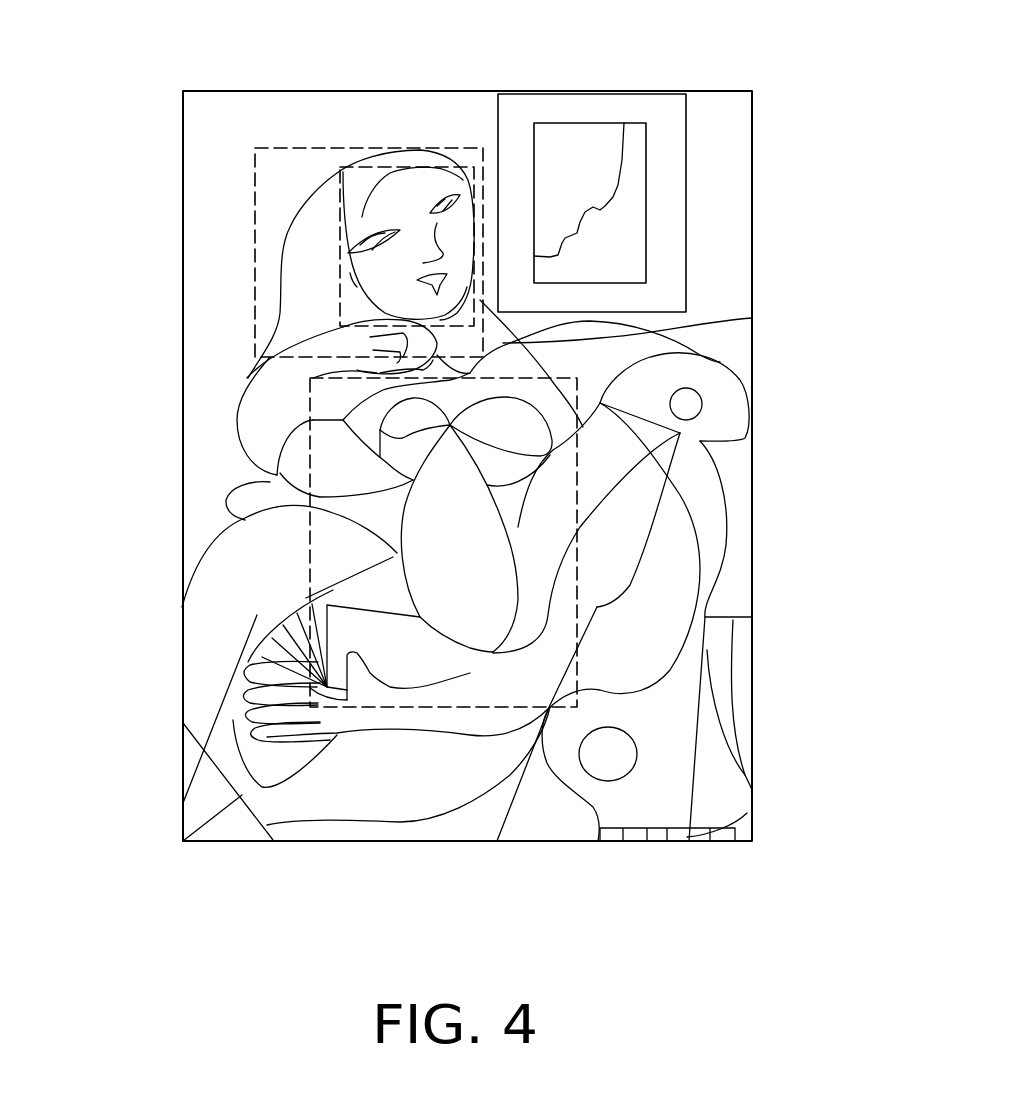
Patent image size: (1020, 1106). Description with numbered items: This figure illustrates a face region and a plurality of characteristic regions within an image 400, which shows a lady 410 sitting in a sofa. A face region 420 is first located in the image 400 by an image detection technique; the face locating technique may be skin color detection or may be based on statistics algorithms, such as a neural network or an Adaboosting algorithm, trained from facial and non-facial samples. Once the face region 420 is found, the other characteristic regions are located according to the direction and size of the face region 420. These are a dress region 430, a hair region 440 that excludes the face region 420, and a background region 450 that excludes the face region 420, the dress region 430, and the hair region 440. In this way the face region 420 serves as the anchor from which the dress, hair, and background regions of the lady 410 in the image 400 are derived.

The image 400 is at (752, 797).
The lady 410 is at (752, 318).
The face region 420 is at (498, 145).
The dress region 430 is at (577, 482).
The hair region 440 is at (252, 205).
The background region 450 is at (232, 468).